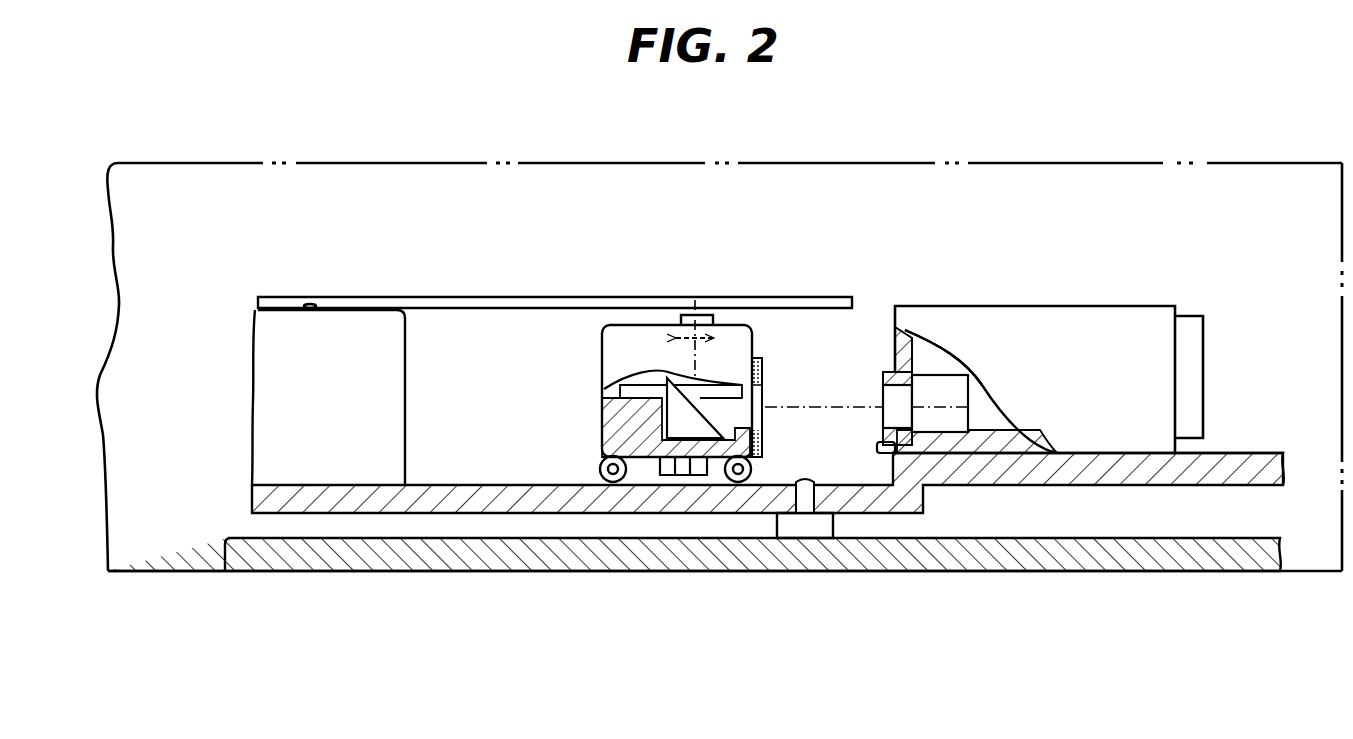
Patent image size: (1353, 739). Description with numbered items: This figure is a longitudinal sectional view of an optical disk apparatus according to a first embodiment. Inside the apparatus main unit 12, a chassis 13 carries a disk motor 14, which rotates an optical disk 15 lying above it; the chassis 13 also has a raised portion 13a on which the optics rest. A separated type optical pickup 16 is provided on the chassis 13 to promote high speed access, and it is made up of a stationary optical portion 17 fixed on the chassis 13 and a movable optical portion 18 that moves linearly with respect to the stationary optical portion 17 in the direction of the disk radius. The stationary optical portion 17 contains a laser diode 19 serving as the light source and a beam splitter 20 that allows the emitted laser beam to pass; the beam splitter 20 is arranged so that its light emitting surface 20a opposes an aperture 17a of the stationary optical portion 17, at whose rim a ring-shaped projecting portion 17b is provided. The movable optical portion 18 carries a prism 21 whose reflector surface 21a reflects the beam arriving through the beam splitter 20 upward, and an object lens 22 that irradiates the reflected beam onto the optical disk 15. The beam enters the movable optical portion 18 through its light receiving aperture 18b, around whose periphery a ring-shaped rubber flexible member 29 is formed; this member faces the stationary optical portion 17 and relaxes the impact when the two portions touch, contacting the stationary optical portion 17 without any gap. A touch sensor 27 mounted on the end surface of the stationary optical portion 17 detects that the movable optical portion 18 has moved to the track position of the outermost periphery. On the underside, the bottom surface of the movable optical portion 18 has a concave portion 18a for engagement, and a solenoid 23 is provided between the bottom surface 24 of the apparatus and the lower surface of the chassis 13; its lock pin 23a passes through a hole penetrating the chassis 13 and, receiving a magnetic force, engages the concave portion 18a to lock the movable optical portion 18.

The apparatus main unit 12 is at (1061, 162).
The chassis 13 is at (463, 483).
The raised plate portion 13a is at (812, 496).
The disk motor 14 is at (268, 428).
The optical disk 15 is at (497, 297).
The separated type optical pickup 16 is at (995, 298).
The stationary optical portion 17 is at (1130, 306).
The aperture 17a is at (883, 392).
The ring-shaped projecting portion 17b is at (890, 370).
The movable optical portion 18 is at (603, 386).
The concave portion 18a is at (681, 476).
The aperture 18b is at (760, 392).
The laser diode 19 is at (1192, 378).
The beam splitter 20 is at (940, 378).
The light emitting surface 20a is at (905, 387).
The prism 21 is at (680, 418).
The reflector surface 21a is at (690, 374).
The object lens 22 is at (677, 335).
The solenoid 23 is at (840, 527).
The lock pin 23a is at (800, 490).
The bottom surface 24 is at (1185, 572).
The touch sensor 27 is at (878, 446).
The flexible member 29 is at (760, 366).